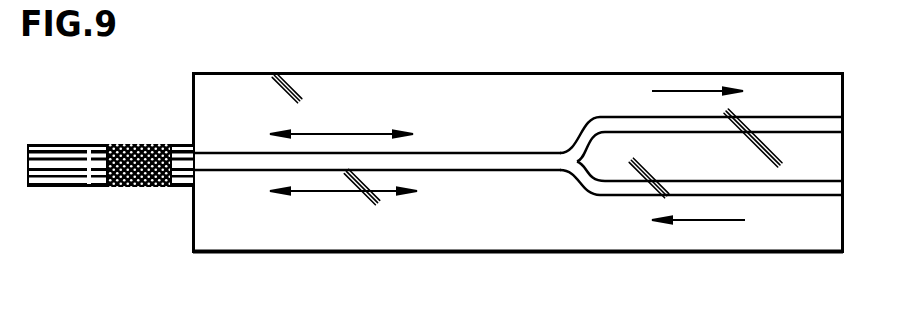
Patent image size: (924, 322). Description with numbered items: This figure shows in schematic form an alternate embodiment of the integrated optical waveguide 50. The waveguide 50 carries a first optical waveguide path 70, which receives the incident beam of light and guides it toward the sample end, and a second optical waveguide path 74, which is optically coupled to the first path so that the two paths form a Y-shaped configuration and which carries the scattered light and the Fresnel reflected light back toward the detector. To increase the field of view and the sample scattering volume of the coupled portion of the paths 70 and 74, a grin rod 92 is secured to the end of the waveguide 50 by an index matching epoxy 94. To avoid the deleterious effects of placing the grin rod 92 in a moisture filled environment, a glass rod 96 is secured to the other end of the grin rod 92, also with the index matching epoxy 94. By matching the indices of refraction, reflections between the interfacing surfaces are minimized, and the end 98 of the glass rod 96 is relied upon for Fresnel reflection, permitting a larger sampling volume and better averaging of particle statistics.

The integrated optical waveguide 50 is at (393, 73).
The first optical waveguide path 70 is at (827, 197).
The second optical waveguide path 74 is at (815, 116).
The grin rod 92 is at (135, 143).
The index matching epoxy 94 is at (105, 188).
The glass rod 96 is at (41, 143).
The end of the glass rod 98 is at (28, 188).